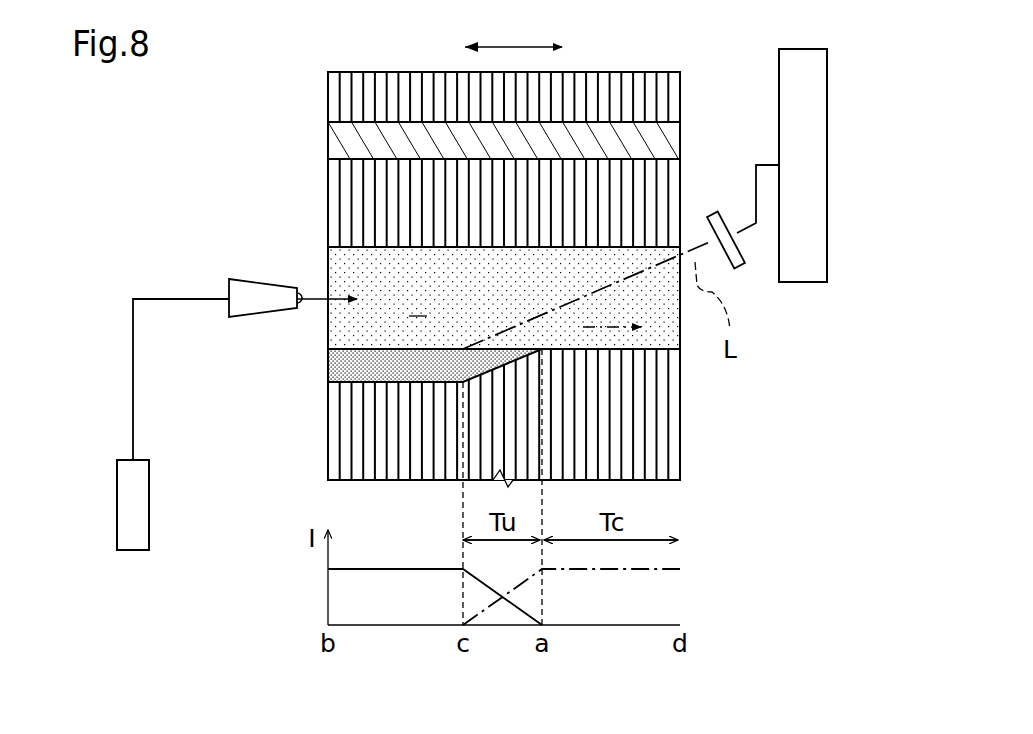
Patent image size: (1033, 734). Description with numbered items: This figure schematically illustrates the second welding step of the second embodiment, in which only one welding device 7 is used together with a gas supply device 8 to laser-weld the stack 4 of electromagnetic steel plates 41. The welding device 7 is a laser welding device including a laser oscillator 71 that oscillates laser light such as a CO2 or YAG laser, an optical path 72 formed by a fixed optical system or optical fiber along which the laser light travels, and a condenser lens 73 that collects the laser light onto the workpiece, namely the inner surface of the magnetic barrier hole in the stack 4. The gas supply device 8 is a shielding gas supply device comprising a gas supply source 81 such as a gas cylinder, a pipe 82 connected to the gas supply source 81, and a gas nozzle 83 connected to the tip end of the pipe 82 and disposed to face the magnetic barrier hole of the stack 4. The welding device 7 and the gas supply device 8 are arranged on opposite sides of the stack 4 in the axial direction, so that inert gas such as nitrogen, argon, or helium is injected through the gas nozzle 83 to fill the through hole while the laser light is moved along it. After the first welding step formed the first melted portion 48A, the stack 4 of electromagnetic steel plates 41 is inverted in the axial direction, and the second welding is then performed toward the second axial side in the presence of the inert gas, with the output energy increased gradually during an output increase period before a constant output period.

The stack 4 is at (300, 45).
The electromagnetic steel plates 41 is at (627, 78).
The first melted portion 48A is at (328, 357).
The welding device 7 is at (850, 108).
The laser oscillator 71 is at (822, 165).
The optical path 72 is at (732, 173).
The condenser lens 73 is at (780, 251).
The gas supply device 8 is at (85, 498).
The gas supply source 81 is at (149, 528).
The pipe 82 is at (133, 338).
The gas nozzle 83 is at (265, 280).